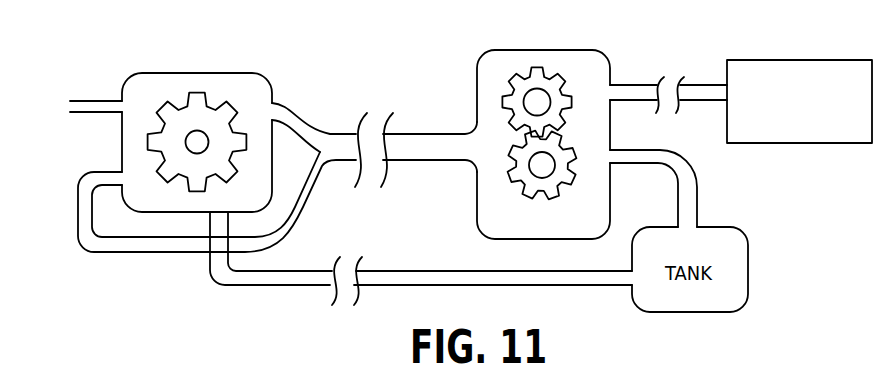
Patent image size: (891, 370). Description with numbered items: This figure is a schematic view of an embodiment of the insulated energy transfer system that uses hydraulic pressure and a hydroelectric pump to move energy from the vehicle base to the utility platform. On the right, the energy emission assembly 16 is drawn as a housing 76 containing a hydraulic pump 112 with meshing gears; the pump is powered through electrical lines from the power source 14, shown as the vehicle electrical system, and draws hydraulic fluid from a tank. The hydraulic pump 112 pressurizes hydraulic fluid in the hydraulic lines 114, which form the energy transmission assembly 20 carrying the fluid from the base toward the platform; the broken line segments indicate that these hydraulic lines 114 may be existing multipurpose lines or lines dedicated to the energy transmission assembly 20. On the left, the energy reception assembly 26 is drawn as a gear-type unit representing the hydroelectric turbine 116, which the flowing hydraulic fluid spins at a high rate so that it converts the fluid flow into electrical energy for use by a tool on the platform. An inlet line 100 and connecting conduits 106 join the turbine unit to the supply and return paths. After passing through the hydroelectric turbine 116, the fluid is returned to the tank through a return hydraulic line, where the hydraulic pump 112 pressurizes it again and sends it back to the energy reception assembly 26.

The power source 14 is at (807, 60).
The energy emission assembly 16 is at (566, 122).
The energy transmission assembly 20 is at (337, 129).
The energy reception assembly 26 is at (221, 67).
The housing 76 is at (476, 212).
The inlet line 100 is at (97, 100).
The pump outlet conduits 106 is at (116, 163).
The hydraulic pump 112 is at (594, 50).
The hydraulic line 114 is at (335, 164).
The hydroelectric turbine 116 is at (283, 47).